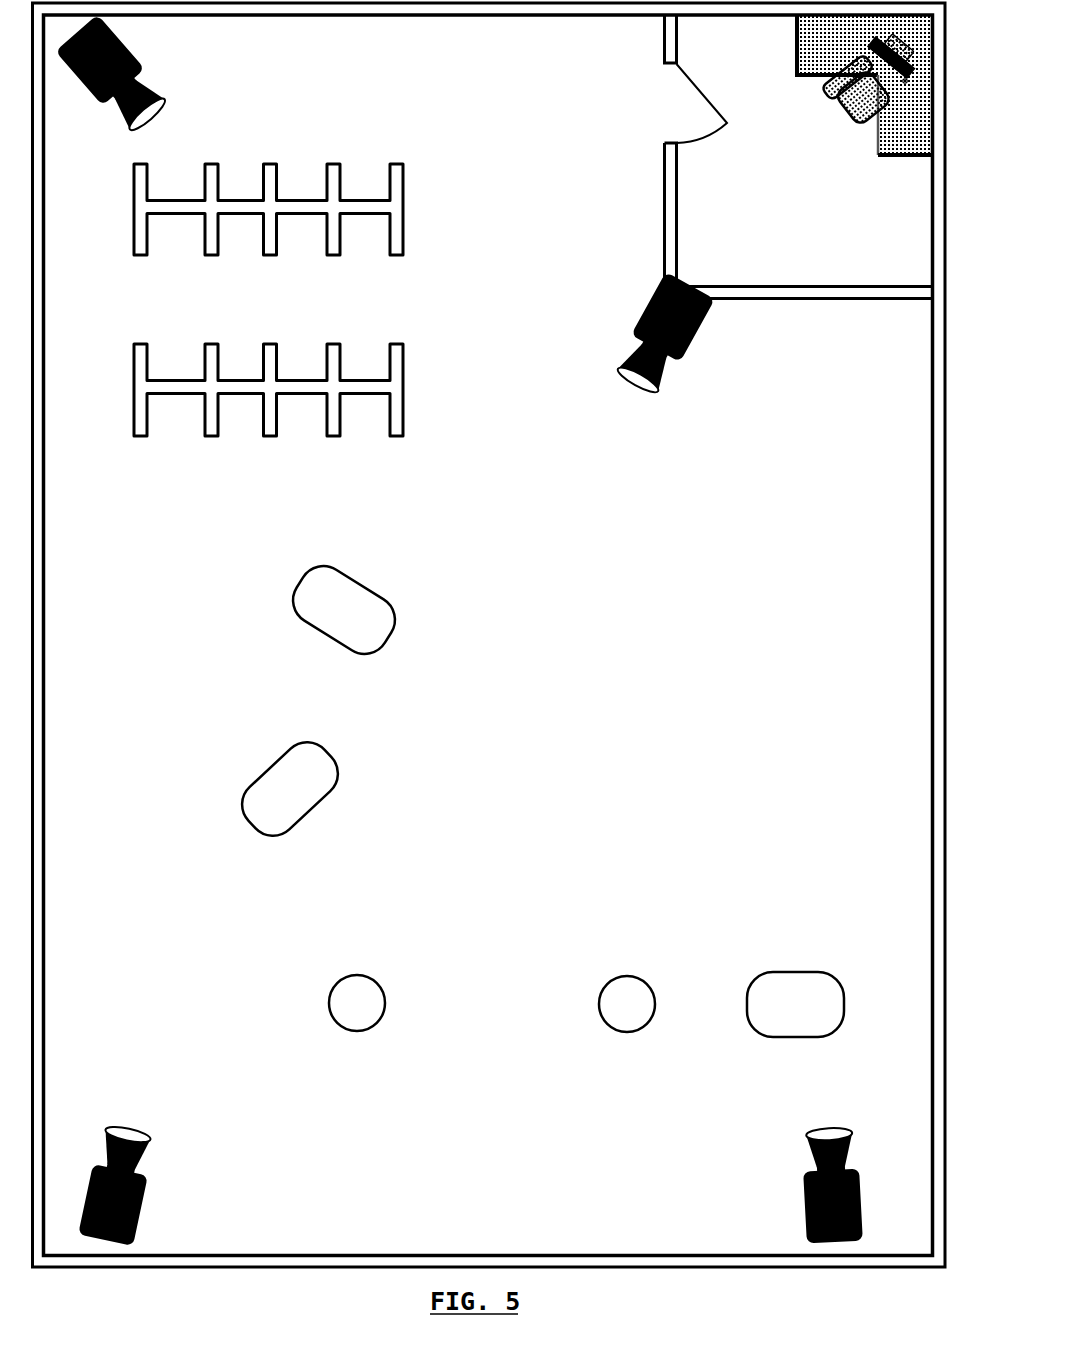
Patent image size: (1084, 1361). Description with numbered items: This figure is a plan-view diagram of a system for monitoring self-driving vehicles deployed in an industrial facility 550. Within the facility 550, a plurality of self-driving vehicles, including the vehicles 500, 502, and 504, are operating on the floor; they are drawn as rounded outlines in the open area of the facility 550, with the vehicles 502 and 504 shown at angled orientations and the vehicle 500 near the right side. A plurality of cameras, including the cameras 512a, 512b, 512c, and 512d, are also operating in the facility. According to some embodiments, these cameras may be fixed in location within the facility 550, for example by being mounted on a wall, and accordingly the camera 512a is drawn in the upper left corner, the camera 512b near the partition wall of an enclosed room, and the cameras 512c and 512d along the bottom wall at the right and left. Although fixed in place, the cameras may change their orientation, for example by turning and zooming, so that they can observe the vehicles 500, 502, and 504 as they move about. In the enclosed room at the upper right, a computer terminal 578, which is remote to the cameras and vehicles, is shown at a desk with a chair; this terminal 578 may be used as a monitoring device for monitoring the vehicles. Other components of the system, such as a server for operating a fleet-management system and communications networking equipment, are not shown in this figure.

The facility 550 is at (492, 100).
The camera 512a is at (163, 100).
The camera 512b is at (622, 367).
The camera 512c is at (807, 1200).
The camera 512d is at (143, 1210).
The computer terminal 578 is at (878, 68).
The self-driving vehicle 500 is at (807, 1018).
The self-driving vehicle 502 is at (306, 806).
The self-driving vehicle 504 is at (363, 618).